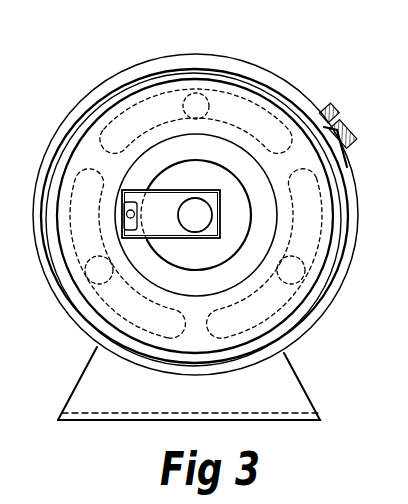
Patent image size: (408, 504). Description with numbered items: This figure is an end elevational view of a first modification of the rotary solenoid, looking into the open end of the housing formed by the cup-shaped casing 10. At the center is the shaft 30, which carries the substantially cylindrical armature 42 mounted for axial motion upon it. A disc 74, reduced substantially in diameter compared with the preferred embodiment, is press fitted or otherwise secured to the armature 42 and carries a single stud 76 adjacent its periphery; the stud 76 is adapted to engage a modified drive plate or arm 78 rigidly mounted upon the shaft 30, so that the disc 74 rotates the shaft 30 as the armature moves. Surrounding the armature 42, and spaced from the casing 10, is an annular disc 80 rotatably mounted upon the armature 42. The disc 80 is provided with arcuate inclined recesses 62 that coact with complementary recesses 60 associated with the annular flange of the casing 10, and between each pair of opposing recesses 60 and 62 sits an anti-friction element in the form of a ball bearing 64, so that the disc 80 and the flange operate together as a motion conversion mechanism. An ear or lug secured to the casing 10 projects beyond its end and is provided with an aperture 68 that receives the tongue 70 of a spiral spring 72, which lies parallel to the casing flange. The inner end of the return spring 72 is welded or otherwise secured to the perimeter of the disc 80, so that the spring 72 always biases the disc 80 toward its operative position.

The cup-shaped casing 10 is at (272, 78).
The shaft 30 is at (192, 210).
The cylindrical armature 42 is at (192, 260).
The recesses 60 is at (234, 113).
The arcuate inclined recesses 62 is at (137, 120).
The ball bearing 64 is at (197, 95).
The aperture 68 is at (334, 117).
The tongue 70 is at (347, 125).
The spiral spring 72 is at (347, 191).
The disc 74 is at (263, 198).
The stud 76 is at (123, 205).
The drive plate or arm 78 is at (157, 207).
The annular disc 80 is at (325, 240).